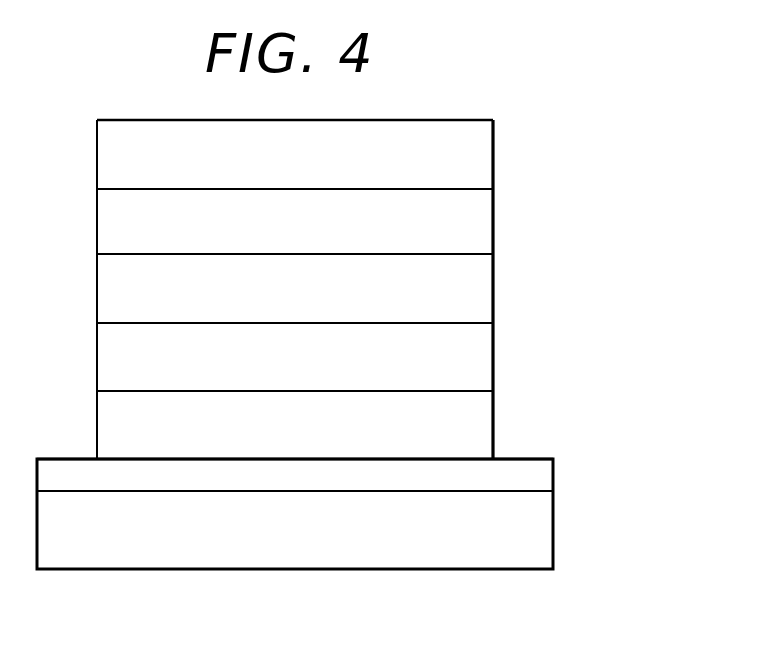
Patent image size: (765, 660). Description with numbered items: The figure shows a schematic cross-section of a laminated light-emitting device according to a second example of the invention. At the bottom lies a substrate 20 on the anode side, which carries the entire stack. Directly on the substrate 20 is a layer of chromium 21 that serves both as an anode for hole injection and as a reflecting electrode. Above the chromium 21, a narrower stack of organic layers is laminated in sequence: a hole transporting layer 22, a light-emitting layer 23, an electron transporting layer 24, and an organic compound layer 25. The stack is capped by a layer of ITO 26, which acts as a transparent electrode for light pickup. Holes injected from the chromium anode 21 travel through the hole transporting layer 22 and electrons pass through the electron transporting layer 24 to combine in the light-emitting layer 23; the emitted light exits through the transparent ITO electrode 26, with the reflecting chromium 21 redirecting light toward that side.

The substrate 20 is at (545, 533).
The chromium anode 21 is at (545, 473).
The hole transporting layer 22 is at (483, 418).
The light-emitting layer 23 is at (483, 352).
The electron transporting layer 24 is at (483, 284).
The organic compound layer 25 is at (483, 218).
The ITO transparent electrode 26 is at (483, 152).